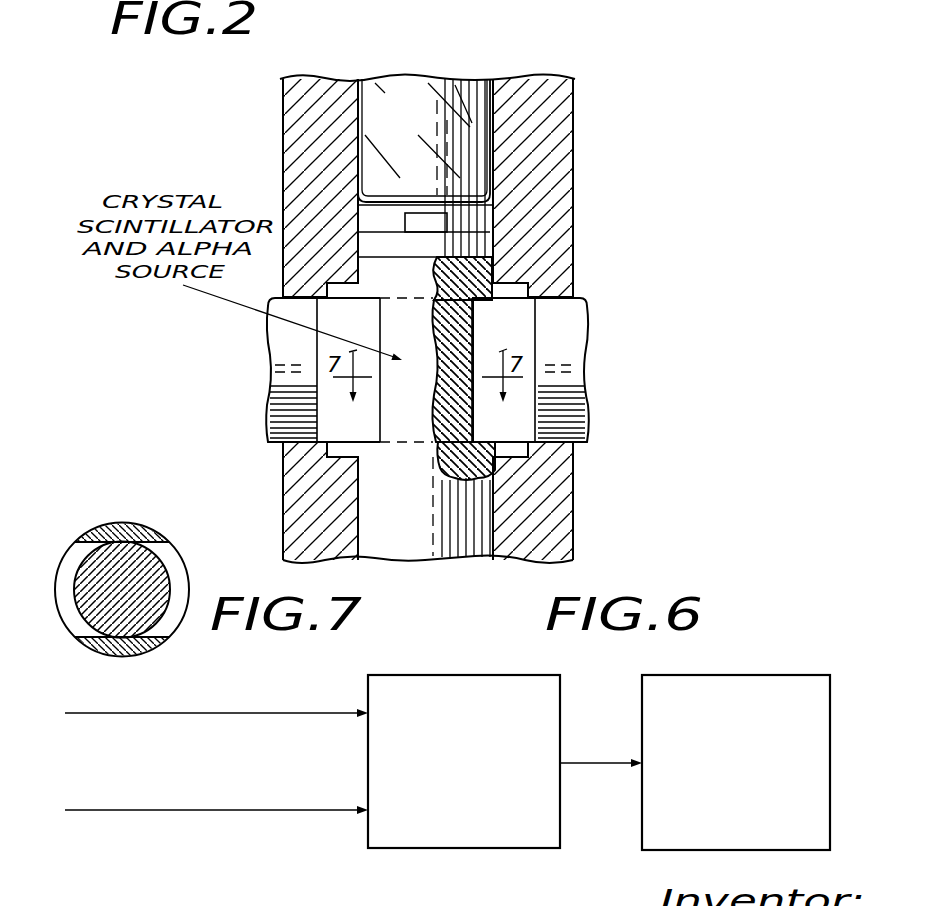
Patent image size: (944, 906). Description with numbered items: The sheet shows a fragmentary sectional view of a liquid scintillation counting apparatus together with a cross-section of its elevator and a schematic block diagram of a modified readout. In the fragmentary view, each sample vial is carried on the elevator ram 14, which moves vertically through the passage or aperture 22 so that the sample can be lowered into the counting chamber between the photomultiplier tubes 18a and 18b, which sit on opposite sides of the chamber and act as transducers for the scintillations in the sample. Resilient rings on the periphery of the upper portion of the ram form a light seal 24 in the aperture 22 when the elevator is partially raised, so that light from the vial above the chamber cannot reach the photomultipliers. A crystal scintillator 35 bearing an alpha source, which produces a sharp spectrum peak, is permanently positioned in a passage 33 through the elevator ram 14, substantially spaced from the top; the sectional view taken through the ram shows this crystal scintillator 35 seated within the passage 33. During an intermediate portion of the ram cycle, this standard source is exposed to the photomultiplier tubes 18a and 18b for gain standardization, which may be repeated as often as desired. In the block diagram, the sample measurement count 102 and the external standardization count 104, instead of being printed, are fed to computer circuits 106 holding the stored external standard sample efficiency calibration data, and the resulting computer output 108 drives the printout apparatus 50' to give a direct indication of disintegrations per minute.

In FIG. 2, the vertical passage or aperture 22 is at (493, 172).
In FIG. 2, the elevator ram 14 is at (478, 218).
In FIG. 2, the light seal 24 is at (478, 250).
In FIG. 2, the crystal scintillator 35 is at (462, 424).
In FIG. 7, the crystal scintillator 35 is at (80, 562).
In FIG. 7, the passage 33 is at (75, 628).
In FIG. 2, the photomultiplier tube 18a is at (258, 392).
In FIG. 2, the photomultiplier tube 18b is at (693, 462).
In FIG. 6, the sample measurement count 102 is at (232, 714).
In FIG. 6, the external standardization count 104 is at (235, 790).
In FIG. 6, the computer circuits 106 is at (516, 664).
In FIG. 6, the computer output 108 is at (608, 745).
In FIG. 6, the printout apparatus 50' is at (736, 744).